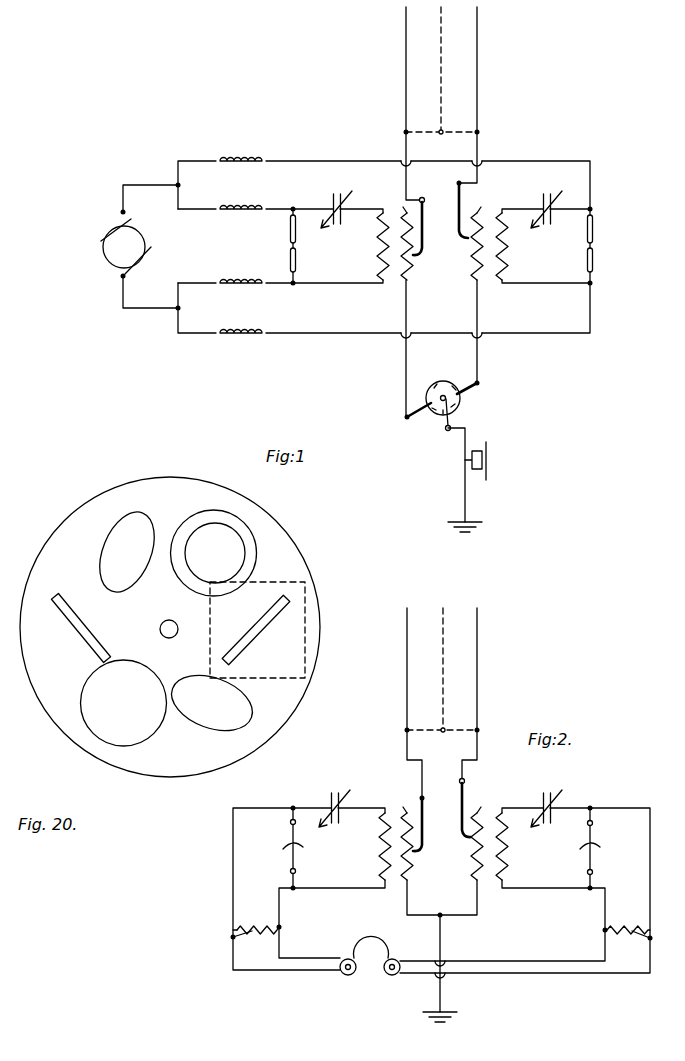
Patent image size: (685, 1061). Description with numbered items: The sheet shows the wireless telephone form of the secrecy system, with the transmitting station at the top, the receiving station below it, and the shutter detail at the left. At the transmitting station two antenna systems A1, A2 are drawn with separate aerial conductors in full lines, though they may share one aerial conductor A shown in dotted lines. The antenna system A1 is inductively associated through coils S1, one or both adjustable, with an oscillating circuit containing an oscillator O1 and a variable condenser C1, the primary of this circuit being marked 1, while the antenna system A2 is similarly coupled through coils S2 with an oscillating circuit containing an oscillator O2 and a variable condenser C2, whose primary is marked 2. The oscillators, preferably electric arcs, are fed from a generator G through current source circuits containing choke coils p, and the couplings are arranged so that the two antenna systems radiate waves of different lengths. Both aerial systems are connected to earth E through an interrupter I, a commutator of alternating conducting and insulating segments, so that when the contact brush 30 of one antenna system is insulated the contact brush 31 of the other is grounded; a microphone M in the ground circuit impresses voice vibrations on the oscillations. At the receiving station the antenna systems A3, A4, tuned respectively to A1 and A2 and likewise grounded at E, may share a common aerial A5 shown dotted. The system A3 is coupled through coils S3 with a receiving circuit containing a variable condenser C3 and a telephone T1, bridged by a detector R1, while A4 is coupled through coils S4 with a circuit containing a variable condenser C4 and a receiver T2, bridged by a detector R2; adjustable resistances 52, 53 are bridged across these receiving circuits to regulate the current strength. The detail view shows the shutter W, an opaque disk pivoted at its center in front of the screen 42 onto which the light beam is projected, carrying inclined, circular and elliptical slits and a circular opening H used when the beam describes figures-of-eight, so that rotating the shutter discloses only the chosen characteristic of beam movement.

In FIG. 1, the antenna system A1 is at (418, 212).
In FIG. 1, the common aerial conductor A is at (442, 71).
In FIG. 1, the antenna system A2 is at (480, 195).
In FIG. 2, the antenna system A3 is at (417, 729).
In FIG. 2, the antenna system A4 is at (482, 722).
In FIG. 2, the common aerial conductor A5 is at (442, 670).
In FIG. 1, the generator G is at (139, 246).
In FIG. 1, the choke coils p is at (241, 246).
In FIG. 1, the oscillator O1 is at (283, 246).
In FIG. 1, the oscillator O2 is at (604, 243).
In FIG. 1, the variable condenser C1 is at (336, 198).
In FIG. 1, the variable condenser C2 is at (546, 198).
In FIG. 2, the variable condenser C3 is at (334, 796).
In FIG. 2, the variable condenser C4 is at (546, 796).
In FIG. 1, the primary coil of first circuit 1 is at (358, 246).
In FIG. 1, the primary coil of second circuit 2 is at (524, 246).
In FIG. 1, the coils S1 is at (396, 272).
In FIG. 1, the coils S2 is at (492, 274).
In FIG. 2, the coils S3 is at (397, 810).
In FIG. 2, the coils S4 is at (486, 815).
In FIG. 1, the interrupter I is at (457, 409).
In FIG. 1, the contact brush 30 is at (418, 417).
In FIG. 1, the contact brush 31 is at (479, 387).
In FIG. 1, the microphone M is at (489, 458).
In FIG. 1, the earth E is at (468, 537).
In FIG. 2, the earth E is at (441, 1027).
In FIG. 20, the shutter W is at (292, 563).
In FIG. 20, the screen 42 is at (297, 650).
In FIG. 20, the circular opening H is at (124, 703).
In FIG. 2, the detector R1 is at (282, 848).
In FIG. 2, the detector R2 is at (599, 848).
In FIG. 2, the adjustable resistance 53 is at (255, 944).
In FIG. 2, the adjustable resistance 52 is at (629, 945).
In FIG. 2, the telephone receiver T1 is at (346, 979).
In FIG. 2, the receiver T2 is at (390, 979).